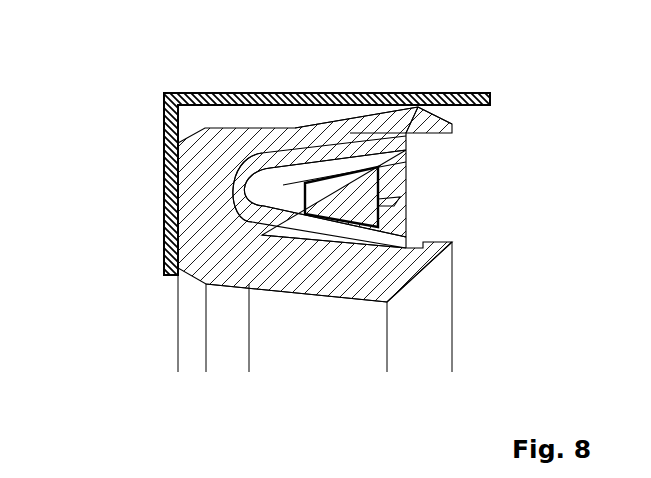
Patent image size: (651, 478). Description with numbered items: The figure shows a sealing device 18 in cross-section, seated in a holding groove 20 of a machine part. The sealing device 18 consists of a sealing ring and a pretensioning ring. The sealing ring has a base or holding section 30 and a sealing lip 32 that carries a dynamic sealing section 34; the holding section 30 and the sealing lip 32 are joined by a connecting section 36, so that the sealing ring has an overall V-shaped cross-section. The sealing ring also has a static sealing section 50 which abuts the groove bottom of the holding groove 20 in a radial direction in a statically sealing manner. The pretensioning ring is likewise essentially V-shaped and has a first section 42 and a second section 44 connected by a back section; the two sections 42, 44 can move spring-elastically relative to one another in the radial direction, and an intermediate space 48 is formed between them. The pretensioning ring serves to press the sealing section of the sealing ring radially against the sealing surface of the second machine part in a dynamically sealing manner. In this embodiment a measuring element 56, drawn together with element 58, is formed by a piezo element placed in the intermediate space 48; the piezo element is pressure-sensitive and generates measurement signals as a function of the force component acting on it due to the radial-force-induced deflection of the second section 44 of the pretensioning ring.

The sealing device 18 is at (240, 163).
The holding groove 20 is at (191, 117).
The holding section 30 is at (255, 136).
The sealing lip 32 is at (290, 270).
The sealing section 34 is at (388, 300).
The connecting section 36 is at (192, 198).
The first section 42 is at (336, 162).
The second section 44 is at (347, 235).
The intermediate space 48 is at (286, 200).
The static sealing section 50 is at (418, 114).
The measuring element 56 is at (357, 197).
The detent 58 is at (389, 201).